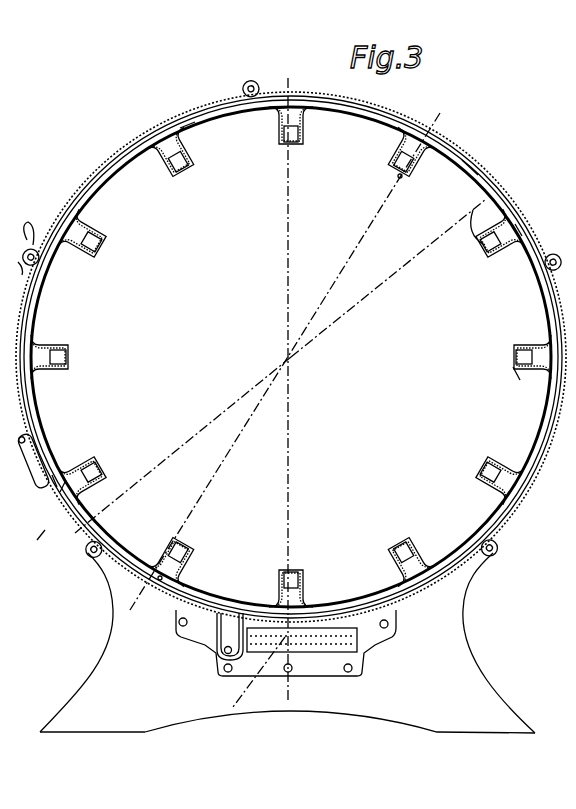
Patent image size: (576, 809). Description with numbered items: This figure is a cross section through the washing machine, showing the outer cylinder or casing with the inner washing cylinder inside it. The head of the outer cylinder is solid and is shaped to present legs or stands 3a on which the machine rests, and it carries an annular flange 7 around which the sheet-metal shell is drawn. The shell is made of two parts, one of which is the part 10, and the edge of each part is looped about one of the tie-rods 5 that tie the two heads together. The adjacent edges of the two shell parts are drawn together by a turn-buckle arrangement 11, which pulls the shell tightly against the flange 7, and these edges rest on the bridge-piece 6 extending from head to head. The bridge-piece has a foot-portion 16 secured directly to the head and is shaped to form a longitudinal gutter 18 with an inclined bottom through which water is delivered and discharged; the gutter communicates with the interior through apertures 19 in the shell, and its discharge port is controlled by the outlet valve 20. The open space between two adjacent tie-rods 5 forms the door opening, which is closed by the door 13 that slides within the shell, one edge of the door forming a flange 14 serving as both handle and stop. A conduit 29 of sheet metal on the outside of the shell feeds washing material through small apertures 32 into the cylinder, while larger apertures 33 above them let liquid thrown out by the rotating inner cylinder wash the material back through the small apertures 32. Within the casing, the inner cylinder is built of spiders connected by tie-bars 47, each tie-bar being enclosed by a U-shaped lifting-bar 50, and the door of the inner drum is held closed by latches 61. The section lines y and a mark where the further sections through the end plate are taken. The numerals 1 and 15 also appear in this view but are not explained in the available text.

The door 13 is at (128, 147).
The lifting-bar 50 is at (188, 175).
The latches 61 is at (187, 130).
The shell part 10 is at (470, 168).
The section line y— y is at (400, 178).
The section line a— a is at (473, 210).
The tie-bars 47 is at (515, 224).
The annular flanges 7 is at (513, 367).
The tie-rods 5 is at (248, 86).
The flange 14 is at (27, 227).
The drum shell 1 is at (0, 232).
The conduit 29 is at (40, 440).
The larger apertures 33 is at (60, 492).
The small apertures 32 is at (57, 487).
The outlet valve 20 is at (37, 540).
The foot-portion 16 is at (197, 628).
The legs or stands 3a is at (110, 700).
The bridge-piece 6 is at (300, 712).
The longitudinal gutter 18 is at (222, 647).
The turn-buckle arrangement 11 is at (300, 645).
The apertures 19 is at (222, 657).
The section block 15 is at (262, 650).